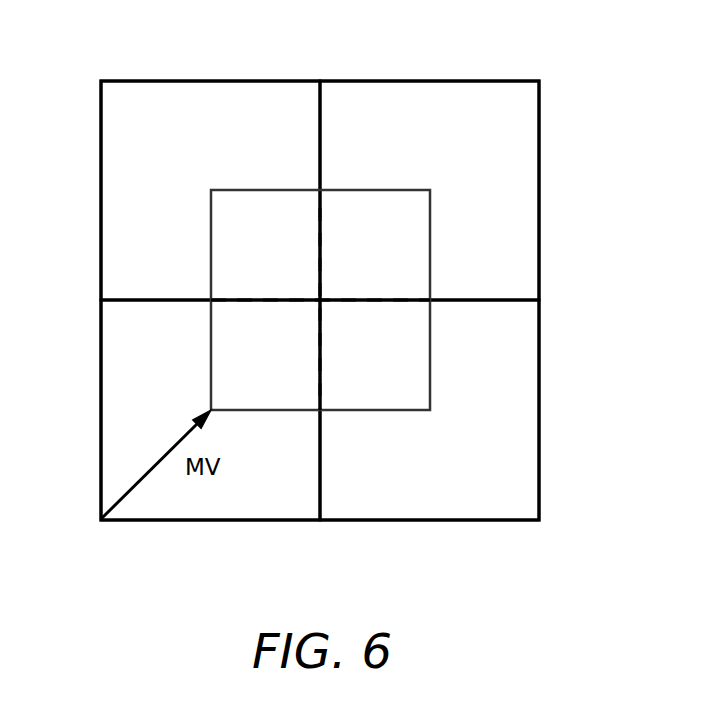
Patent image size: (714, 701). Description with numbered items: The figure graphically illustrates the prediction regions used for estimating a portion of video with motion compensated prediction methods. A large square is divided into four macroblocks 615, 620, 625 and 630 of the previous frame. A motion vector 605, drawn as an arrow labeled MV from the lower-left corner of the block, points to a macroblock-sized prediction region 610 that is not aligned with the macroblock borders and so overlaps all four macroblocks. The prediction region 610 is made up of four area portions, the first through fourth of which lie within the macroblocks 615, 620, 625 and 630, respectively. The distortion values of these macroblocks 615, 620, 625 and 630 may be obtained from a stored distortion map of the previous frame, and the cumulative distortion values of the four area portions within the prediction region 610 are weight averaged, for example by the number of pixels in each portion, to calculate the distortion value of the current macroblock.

The motion vector 605 is at (100, 415).
The prediction region 610 is at (380, 190).
The macroblock 615 is at (206, 81).
The macroblock 620 is at (498, 81).
The macroblock 625 is at (202, 520).
The macroblock 630 is at (490, 520).